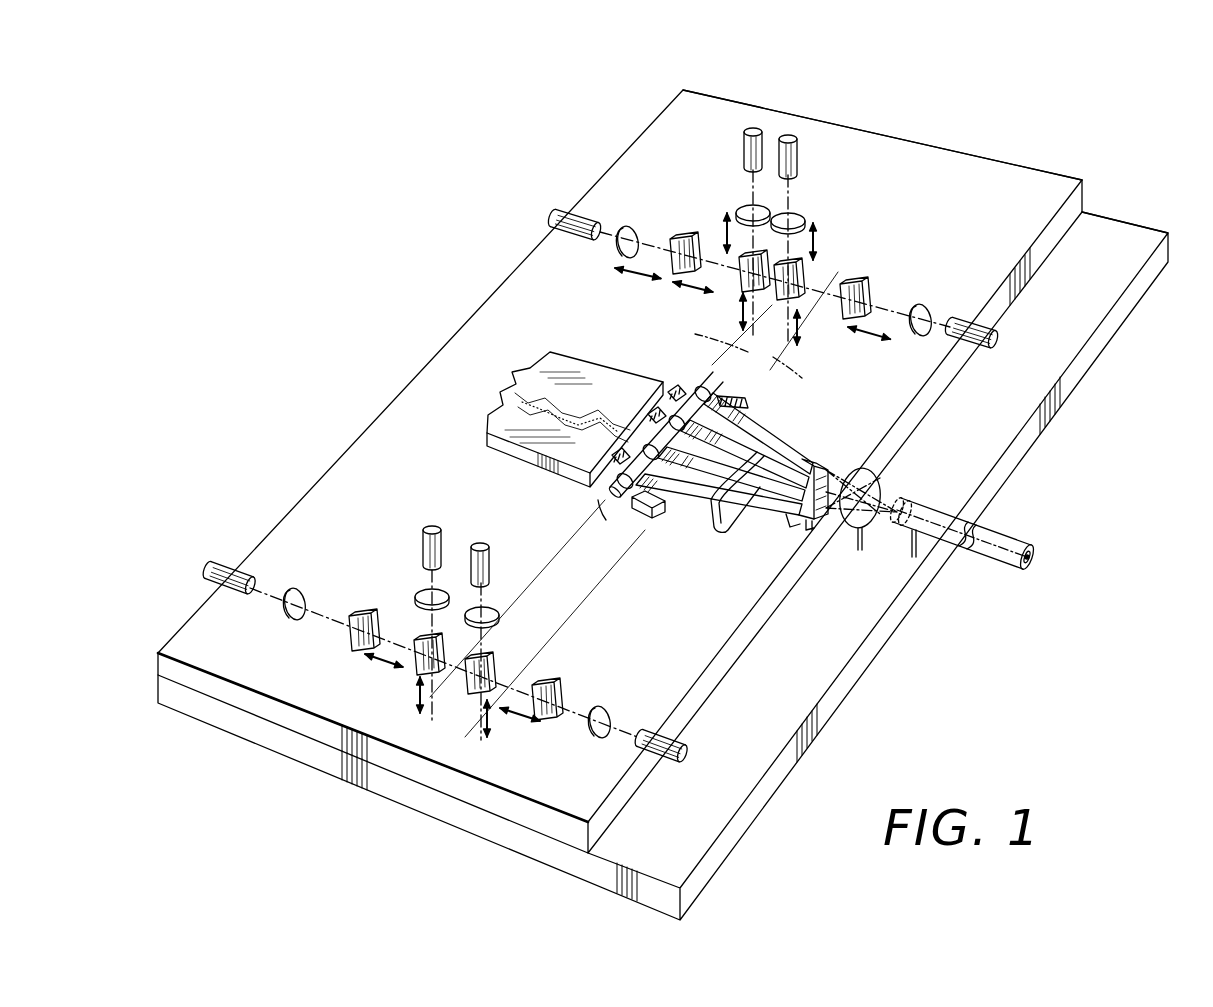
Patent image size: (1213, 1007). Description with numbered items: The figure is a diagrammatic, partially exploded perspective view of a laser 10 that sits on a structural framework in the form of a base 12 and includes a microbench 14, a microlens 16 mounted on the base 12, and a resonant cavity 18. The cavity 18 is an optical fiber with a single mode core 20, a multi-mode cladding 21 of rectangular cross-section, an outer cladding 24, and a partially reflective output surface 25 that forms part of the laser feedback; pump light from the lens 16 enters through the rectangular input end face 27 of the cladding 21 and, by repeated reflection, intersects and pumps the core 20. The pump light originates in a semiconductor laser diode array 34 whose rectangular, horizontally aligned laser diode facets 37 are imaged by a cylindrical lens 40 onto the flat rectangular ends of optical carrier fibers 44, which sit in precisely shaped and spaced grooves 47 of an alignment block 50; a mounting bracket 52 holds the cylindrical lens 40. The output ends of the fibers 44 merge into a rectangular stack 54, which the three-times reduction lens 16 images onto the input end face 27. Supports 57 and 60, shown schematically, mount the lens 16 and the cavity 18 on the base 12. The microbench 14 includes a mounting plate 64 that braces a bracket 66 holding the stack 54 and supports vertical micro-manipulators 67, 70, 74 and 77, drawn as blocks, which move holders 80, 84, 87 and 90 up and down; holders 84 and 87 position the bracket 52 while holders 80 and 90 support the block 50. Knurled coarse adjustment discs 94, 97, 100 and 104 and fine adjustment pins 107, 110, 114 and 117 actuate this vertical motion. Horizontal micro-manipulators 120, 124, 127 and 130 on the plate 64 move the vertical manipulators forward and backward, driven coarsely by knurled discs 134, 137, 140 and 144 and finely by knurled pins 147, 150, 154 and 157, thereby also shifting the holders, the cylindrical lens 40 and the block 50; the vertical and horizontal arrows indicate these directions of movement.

The laser 10 is at (1196, 164).
The base 12 is at (663, 566).
The microbench 14 is at (620, 445).
The microlens 16 is at (880, 472).
The resonant cavity 18 is at (981, 437).
The single mode core 20 is at (987, 532).
The multi-mode cladding 21 is at (1038, 552).
The outer cladding 24 is at (948, 556).
The partially reflective output surface 25 is at (1036, 530).
The rectangular input end face 27 is at (910, 486).
The semiconductor laser diode array 34 is at (546, 362).
The laser diode facets 37 is at (606, 462).
The cylindrical lens 40 is at (606, 491).
The optical carrier fibers 44 is at (757, 512).
The grooves 47 is at (746, 398).
The block 50 is at (644, 520).
The mounting bracket 52 is at (607, 502).
The rectangular stack 54 is at (808, 458).
The support 57 is at (860, 552).
The support 60 is at (912, 558).
The mounting plate 64 is at (930, 156).
The bracket 66 is at (788, 528).
The micro-manipulator 67 is at (800, 300).
The micro-manipulator 70 is at (738, 300).
The micro-manipulator 74 is at (412, 668).
The micro-manipulator 77 is at (468, 690).
The holder 80 is at (640, 382).
The holder 84 is at (707, 337).
The holder 87 is at (560, 585).
The holder 90 is at (588, 612).
The coarse adjustment disc 94 is at (807, 208).
The coarse adjustment disc 97 is at (748, 208).
The coarse adjustment disc 100 is at (418, 590).
The coarse adjustment disc 104 is at (488, 604).
The fine adjustment pin 107 is at (820, 157).
The fine adjustment pin 110 is at (745, 138).
The fine adjustment pin 114 is at (422, 532).
The fine adjustment pin 117 is at (492, 552).
The horizontal micro-manipulator 120 is at (862, 282).
The horizontal micro-manipulator 124 is at (690, 238).
The horizontal micro-manipulator 127 is at (348, 642).
The horizontal micro-manipulator 130 is at (552, 722).
The coarse adjustment disc 134 is at (925, 306).
The coarse adjustment disc 137 is at (625, 227).
The coarse adjustment disc 140 is at (285, 614).
The coarse adjustment disc 144 is at (597, 742).
The fine adjustment pin 147 is at (998, 332).
The fine adjustment pin 150 is at (550, 222).
The fine adjustment pin 154 is at (250, 572).
The fine adjustment pin 157 is at (668, 758).